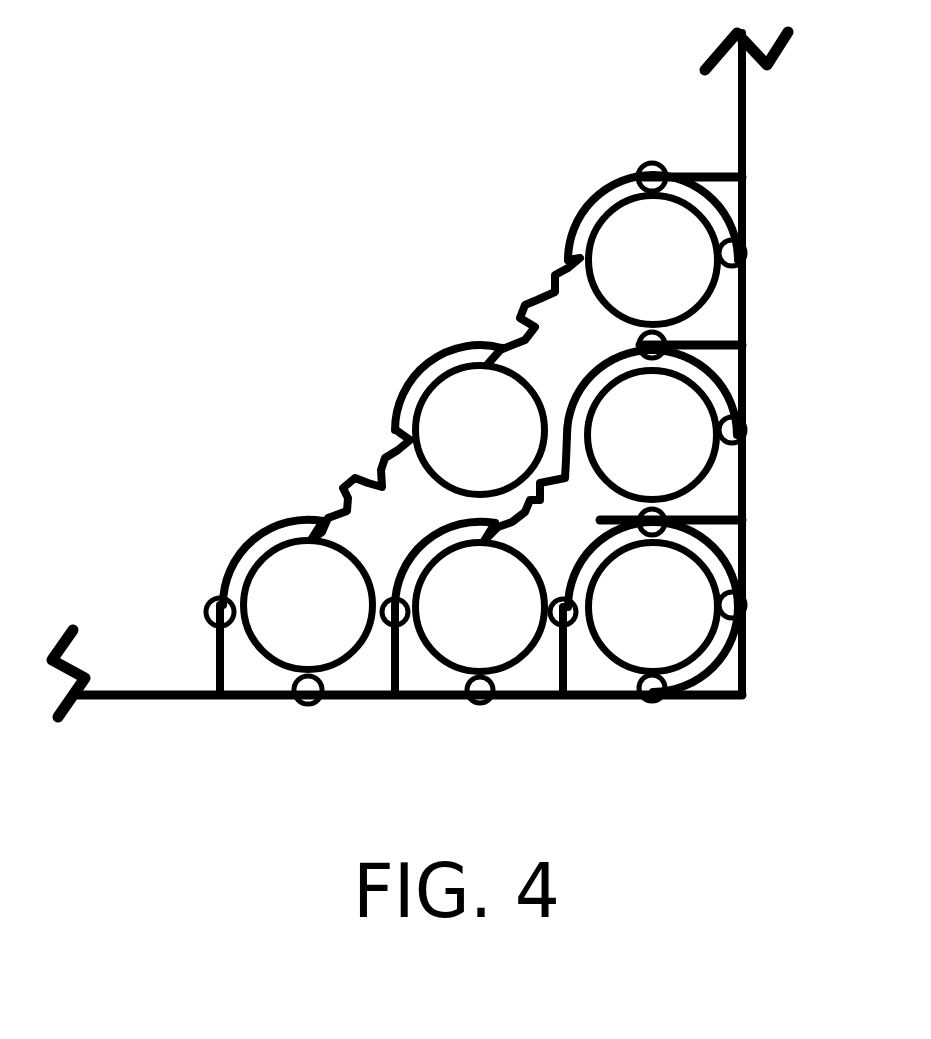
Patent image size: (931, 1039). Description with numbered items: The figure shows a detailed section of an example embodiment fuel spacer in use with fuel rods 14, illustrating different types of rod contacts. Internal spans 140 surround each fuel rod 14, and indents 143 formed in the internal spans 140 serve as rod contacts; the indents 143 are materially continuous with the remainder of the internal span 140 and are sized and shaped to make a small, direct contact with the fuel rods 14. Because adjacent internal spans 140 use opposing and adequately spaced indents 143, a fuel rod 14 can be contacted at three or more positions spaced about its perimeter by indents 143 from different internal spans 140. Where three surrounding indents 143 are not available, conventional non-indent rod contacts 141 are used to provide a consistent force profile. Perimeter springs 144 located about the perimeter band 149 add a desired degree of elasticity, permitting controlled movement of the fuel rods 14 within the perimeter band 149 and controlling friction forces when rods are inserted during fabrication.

The fuel rod 14 is at (735, 455).
The internal span 140 is at (580, 193).
The non-indent rod contact 141 is at (670, 337).
The indent 143 is at (570, 437).
The perimeter spring 144 is at (725, 500).
The perimeter band 149 is at (167, 697).